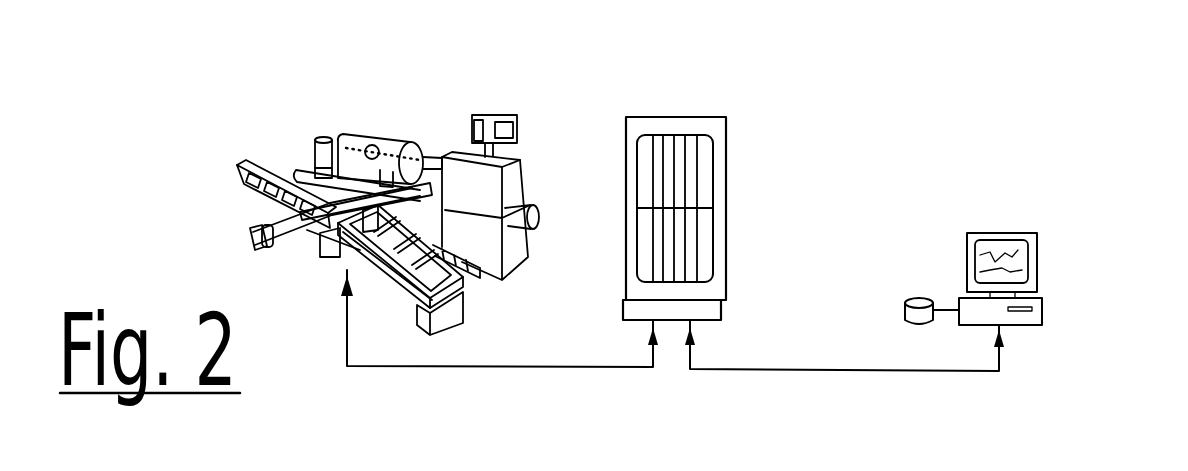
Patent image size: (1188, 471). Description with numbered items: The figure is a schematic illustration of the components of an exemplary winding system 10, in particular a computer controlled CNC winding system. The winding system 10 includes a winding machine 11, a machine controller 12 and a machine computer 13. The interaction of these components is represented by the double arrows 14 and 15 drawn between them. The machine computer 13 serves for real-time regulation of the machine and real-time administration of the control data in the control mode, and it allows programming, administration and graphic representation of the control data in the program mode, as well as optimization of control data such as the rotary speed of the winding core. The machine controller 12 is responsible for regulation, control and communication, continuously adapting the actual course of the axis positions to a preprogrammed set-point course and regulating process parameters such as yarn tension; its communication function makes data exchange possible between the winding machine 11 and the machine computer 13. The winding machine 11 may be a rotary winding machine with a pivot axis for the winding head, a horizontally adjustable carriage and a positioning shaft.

The winding system 10 is at (150, 96).
The winding machine 11 is at (420, 141).
The machine controller 12 is at (727, 168).
The machine computer 13 is at (1030, 292).
The double arrow 14 is at (783, 370).
The double arrow 15 is at (512, 365).